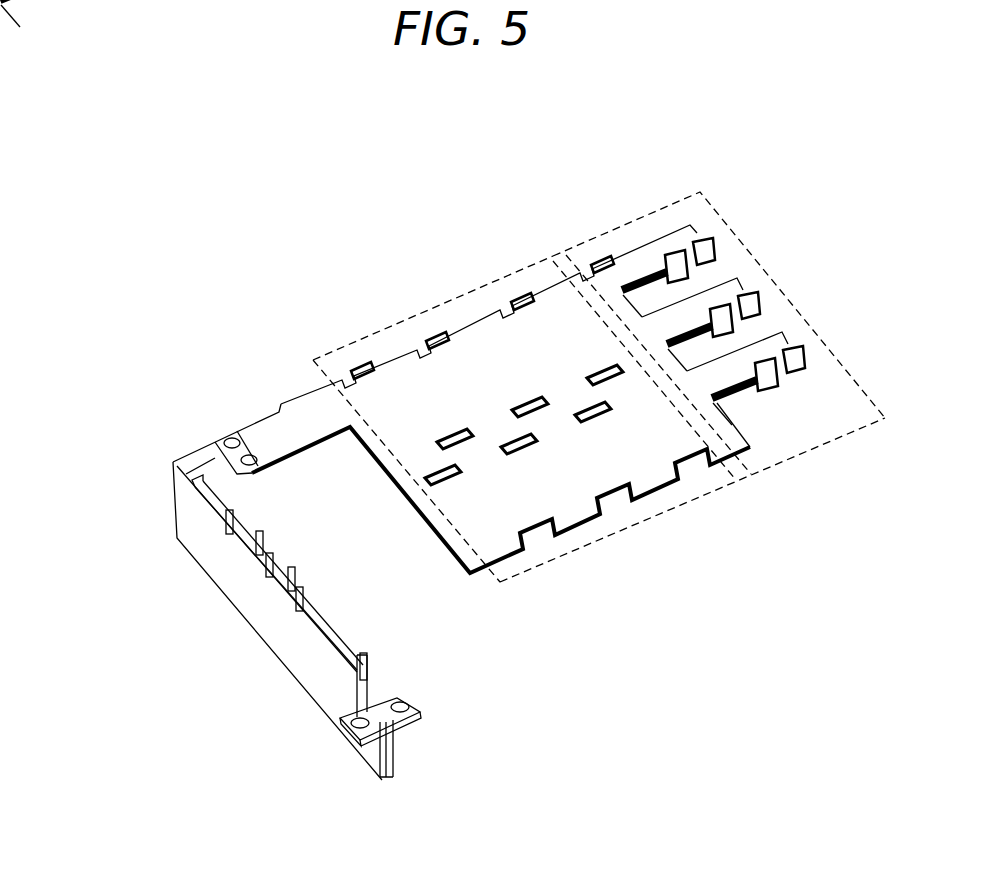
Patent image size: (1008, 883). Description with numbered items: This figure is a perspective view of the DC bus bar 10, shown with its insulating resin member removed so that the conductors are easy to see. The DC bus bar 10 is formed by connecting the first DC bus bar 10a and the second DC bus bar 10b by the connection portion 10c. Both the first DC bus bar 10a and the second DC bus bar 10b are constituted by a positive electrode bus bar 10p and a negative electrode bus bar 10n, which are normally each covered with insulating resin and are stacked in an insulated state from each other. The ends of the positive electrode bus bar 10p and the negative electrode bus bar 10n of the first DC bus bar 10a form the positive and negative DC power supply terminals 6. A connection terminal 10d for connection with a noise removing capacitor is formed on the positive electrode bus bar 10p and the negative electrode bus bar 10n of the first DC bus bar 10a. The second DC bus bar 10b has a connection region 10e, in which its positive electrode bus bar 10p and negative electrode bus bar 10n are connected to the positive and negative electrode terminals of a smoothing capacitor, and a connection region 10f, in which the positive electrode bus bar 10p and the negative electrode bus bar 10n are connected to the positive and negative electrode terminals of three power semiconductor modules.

The DC bus bar 10 is at (207, 237).
The first DC bus bar 10a is at (173, 507).
The second DC bus bar 10b is at (390, 359).
The connection portion 10c is at (215, 437).
The connection terminal 10d is at (258, 563).
The connection region 10e is at (488, 282).
The connection region 10f is at (643, 218).
The negative electrode bus bar 10n is at (305, 606).
The positive electrode bus bar 10p is at (263, 620).
The DC power supply terminals 6 is at (395, 693).